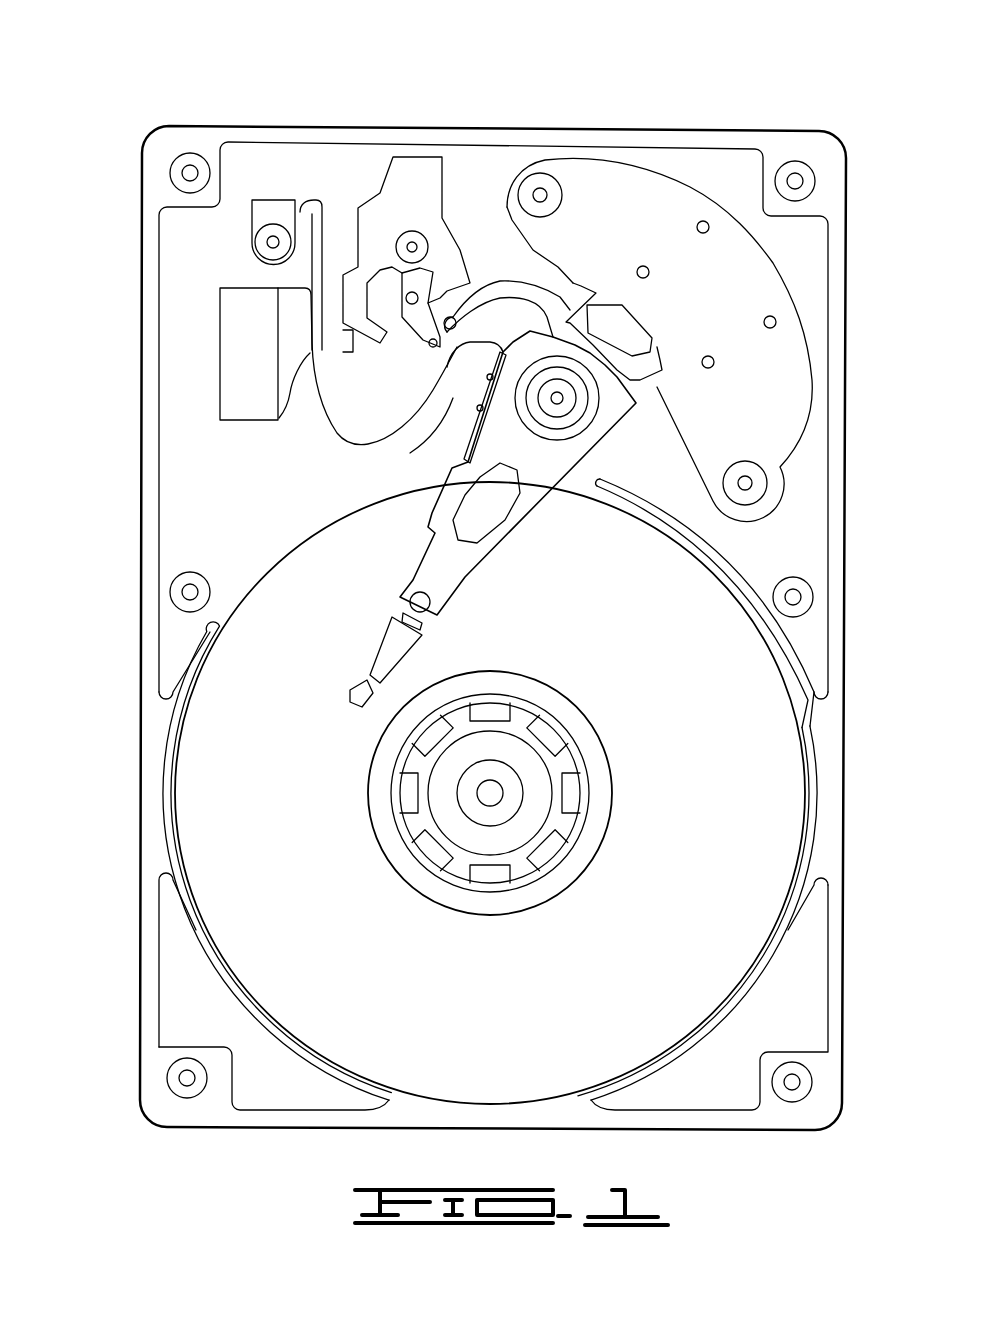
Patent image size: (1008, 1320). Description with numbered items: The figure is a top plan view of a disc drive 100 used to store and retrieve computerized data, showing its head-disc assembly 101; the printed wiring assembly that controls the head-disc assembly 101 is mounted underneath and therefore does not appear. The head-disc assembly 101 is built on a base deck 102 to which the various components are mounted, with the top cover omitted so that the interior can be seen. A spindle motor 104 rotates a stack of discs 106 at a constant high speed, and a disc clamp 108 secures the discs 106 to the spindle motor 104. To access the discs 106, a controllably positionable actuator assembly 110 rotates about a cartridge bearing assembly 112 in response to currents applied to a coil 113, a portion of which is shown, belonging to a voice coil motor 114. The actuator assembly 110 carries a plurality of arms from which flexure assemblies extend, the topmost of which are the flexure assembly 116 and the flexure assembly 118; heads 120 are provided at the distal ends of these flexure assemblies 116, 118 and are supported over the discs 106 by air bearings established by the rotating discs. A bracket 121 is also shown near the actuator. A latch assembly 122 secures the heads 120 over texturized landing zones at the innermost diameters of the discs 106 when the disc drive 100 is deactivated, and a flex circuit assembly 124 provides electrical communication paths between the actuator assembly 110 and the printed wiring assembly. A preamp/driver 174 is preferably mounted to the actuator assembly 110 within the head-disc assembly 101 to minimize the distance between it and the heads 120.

The disc drive 100 is at (250, 100).
The head-disc assembly 101 is at (135, 243).
The base deck 102 is at (235, 488).
The spindle motor 104 is at (500, 820).
The discs 106 is at (738, 880).
The disc clamp 108 is at (388, 840).
The actuator assembly 110 is at (533, 473).
The cartridge bearing assembly 112 is at (567, 414).
The coil 113 is at (660, 362).
The voice coil motor 114 is at (597, 230).
The flexure assembly 116 is at (427, 580).
The flexure assembly 118 is at (380, 658).
The heads 120 is at (355, 690).
The bracket 121 is at (412, 178).
The latch assembly 122 is at (348, 449).
The flex circuit assembly 124 is at (458, 447).
The preamp/driver 174 is at (405, 438).